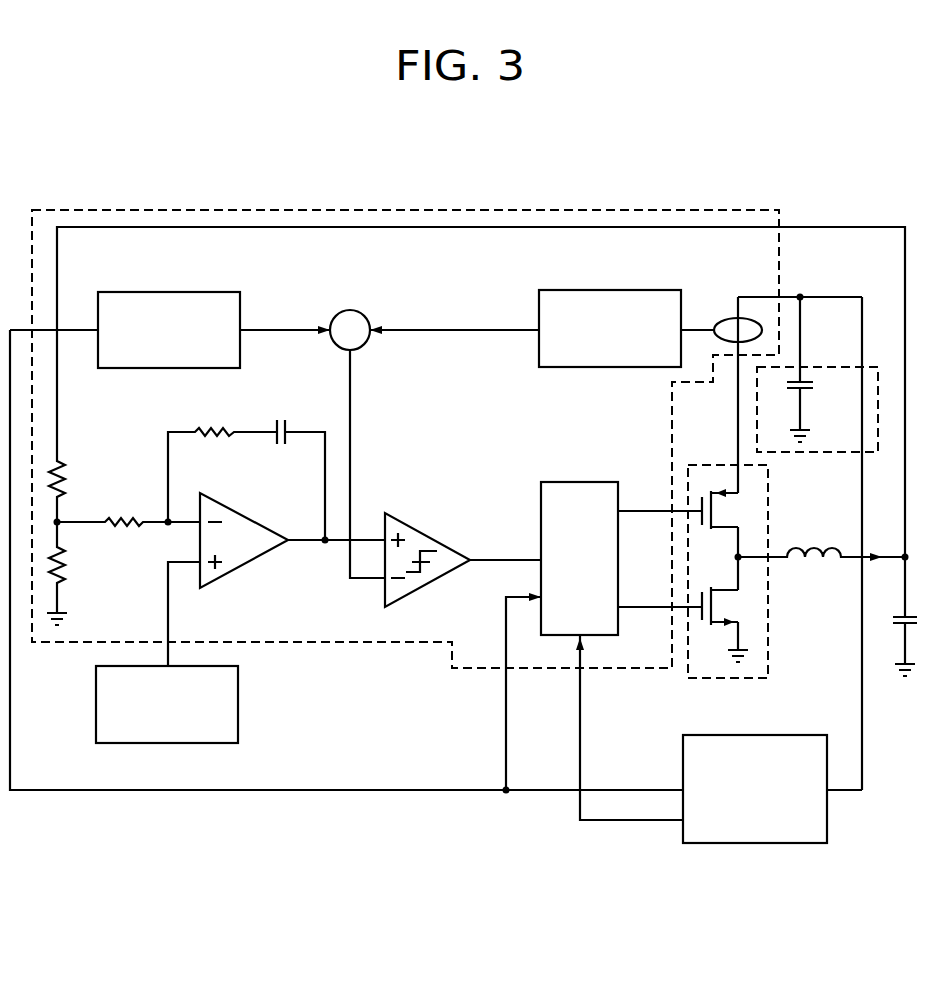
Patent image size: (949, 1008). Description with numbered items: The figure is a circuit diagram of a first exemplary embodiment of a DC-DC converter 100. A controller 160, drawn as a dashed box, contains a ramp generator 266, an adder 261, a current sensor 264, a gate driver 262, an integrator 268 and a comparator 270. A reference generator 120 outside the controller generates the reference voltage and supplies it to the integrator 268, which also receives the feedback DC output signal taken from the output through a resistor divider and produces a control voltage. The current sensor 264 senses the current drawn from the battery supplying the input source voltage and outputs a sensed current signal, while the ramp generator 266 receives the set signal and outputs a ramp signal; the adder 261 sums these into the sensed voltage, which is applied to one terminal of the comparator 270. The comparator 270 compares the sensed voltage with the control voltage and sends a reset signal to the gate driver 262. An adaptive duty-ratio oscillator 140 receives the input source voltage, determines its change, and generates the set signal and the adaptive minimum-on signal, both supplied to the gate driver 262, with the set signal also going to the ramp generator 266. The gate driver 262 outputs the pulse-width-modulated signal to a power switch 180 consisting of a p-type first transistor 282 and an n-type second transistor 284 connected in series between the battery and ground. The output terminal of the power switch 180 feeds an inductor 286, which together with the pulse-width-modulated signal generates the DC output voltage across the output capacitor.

The DC-DC converter 100 is at (477, 129).
The controller 160 is at (397, 210).
The ramp generator 266 is at (167, 292).
The adder 261 is at (350, 310).
The current sensor 264 is at (608, 290).
The gate driver 262 is at (573, 482).
The integrator 268 is at (246, 517).
The comparator 270 is at (457, 552).
The power switch 180 is at (770, 540).
The first transistor 282 is at (729, 539).
The second transistor 284 is at (729, 624).
The inductor 286 is at (833, 548).
The adaptive duty-ratio oscillator 140 is at (796, 735).
The reference generator 120 is at (238, 700).